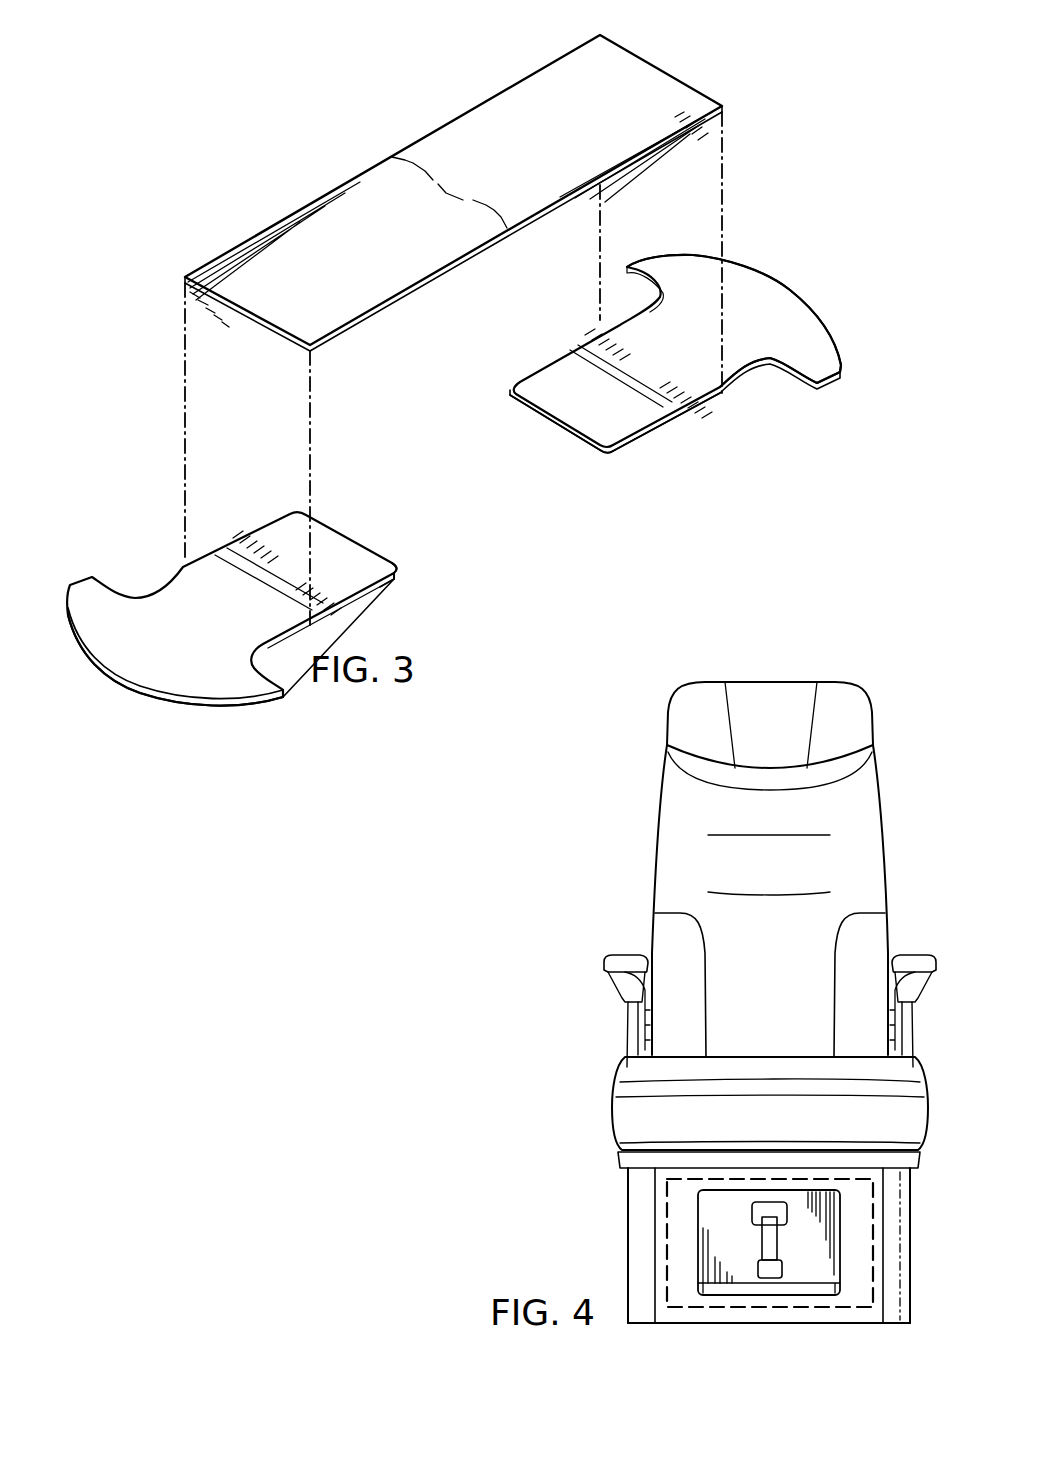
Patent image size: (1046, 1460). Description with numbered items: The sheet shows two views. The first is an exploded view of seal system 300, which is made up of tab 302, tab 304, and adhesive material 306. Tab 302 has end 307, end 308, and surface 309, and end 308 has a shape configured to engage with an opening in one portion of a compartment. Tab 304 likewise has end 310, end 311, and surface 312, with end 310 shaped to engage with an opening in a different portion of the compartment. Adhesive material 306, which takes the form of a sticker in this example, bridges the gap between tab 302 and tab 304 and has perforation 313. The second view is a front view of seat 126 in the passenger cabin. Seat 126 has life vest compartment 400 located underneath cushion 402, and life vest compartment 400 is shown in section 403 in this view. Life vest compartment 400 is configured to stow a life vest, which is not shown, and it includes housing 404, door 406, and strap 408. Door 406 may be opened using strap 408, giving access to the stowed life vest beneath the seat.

In FIG. 3, the seal system 300 is at (385, 66).
In FIG. 3, the tab 302 is at (251, 600).
In FIG. 3, the tab 304 is at (691, 367).
In FIG. 3, the adhesive material 306 is at (453, 178).
In FIG. 3, the end 307 is at (383, 553).
In FIG. 3, the end 308 is at (143, 694).
In FIG. 3, the surface 309 is at (340, 546).
In FIG. 3, the end 310 is at (830, 301).
In FIG. 3, the end 311 is at (580, 438).
In FIG. 3, the surface 312 is at (559, 367).
In FIG. 3, the perforation 313 is at (483, 203).
In FIG. 4, the seat 126 is at (755, 925).
In FIG. 4, the life vest compartment 400 is at (714, 1275).
In FIG. 4, the cushion 402 is at (775, 1068).
In FIG. 4, the section 403 is at (703, 1314).
In FIG. 4, the housing 404 is at (677, 1258).
In FIG. 4, the door 406 is at (822, 1275).
In FIG. 4, the strap 408 is at (770, 1270).